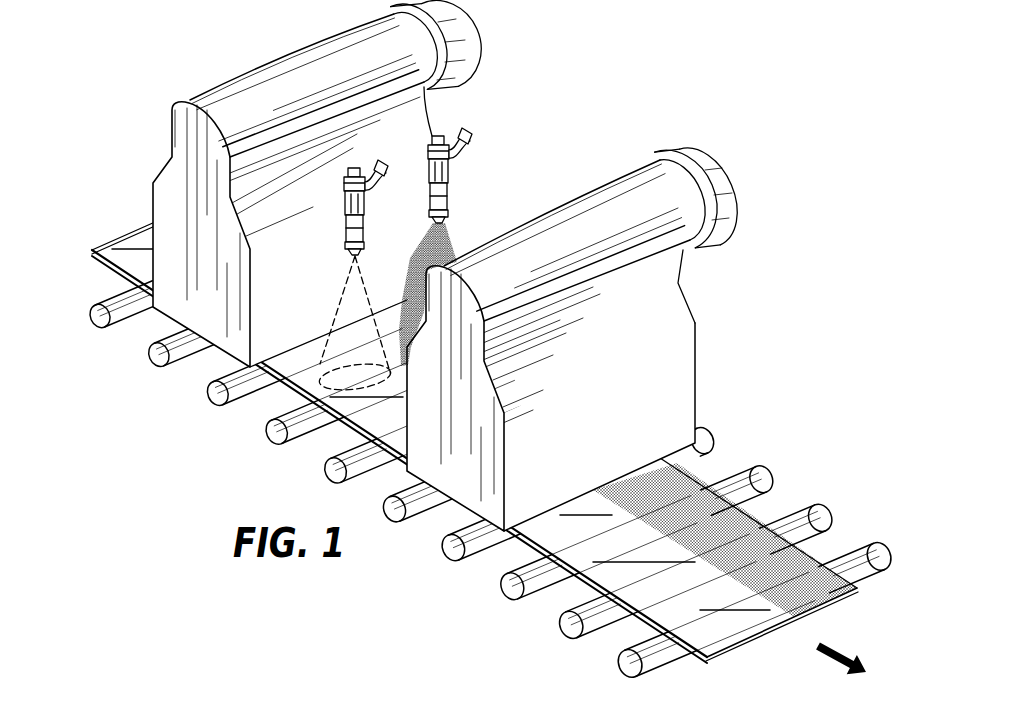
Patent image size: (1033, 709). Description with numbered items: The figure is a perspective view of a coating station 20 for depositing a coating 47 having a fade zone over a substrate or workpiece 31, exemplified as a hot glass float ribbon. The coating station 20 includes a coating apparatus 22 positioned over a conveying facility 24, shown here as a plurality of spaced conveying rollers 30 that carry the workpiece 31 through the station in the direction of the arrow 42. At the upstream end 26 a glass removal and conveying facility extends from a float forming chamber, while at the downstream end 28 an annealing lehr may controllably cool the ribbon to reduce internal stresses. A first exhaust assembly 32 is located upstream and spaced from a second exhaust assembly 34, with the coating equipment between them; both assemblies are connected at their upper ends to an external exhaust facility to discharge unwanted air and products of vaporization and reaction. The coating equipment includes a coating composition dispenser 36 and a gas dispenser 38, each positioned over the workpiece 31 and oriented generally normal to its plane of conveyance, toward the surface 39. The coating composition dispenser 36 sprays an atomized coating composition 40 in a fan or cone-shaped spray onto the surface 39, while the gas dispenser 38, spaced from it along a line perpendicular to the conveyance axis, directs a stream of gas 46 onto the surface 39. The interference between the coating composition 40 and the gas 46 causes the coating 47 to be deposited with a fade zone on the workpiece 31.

The coating station 20 is at (472, 341).
The coating apparatus 22 is at (572, 325).
The conveying facility 24 is at (467, 427).
The upstream end of the coating station 26 is at (281, 184).
The downstream end of the coating station 28 is at (812, 449).
The conveying rollers 30 is at (214, 396).
The workpiece 31 is at (98, 246).
The first exhaust assembly 32 is at (292, 209).
The second exhaust assembly 34 is at (673, 305).
The coating composition dispenser 36 is at (450, 167).
The gas dispenser 38 is at (367, 229).
The surface of the workpiece 39 is at (130, 240).
The coating composition 40 is at (449, 240).
The arrow indicating direction of travel 42 is at (848, 648).
The gas 46 is at (323, 314).
The coating 47 is at (813, 571).